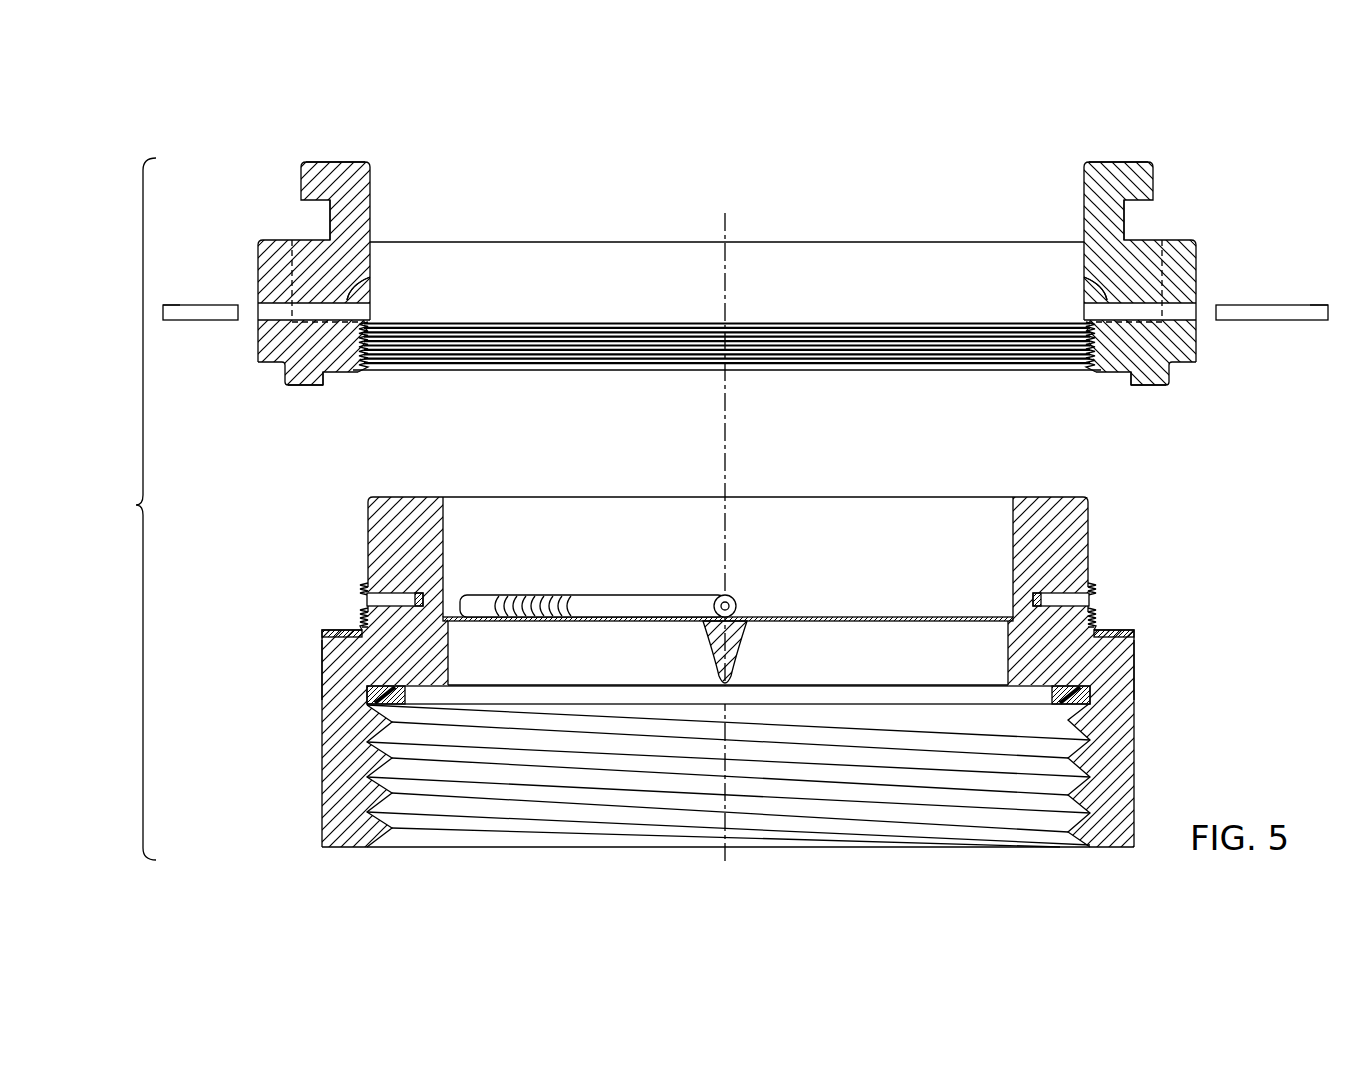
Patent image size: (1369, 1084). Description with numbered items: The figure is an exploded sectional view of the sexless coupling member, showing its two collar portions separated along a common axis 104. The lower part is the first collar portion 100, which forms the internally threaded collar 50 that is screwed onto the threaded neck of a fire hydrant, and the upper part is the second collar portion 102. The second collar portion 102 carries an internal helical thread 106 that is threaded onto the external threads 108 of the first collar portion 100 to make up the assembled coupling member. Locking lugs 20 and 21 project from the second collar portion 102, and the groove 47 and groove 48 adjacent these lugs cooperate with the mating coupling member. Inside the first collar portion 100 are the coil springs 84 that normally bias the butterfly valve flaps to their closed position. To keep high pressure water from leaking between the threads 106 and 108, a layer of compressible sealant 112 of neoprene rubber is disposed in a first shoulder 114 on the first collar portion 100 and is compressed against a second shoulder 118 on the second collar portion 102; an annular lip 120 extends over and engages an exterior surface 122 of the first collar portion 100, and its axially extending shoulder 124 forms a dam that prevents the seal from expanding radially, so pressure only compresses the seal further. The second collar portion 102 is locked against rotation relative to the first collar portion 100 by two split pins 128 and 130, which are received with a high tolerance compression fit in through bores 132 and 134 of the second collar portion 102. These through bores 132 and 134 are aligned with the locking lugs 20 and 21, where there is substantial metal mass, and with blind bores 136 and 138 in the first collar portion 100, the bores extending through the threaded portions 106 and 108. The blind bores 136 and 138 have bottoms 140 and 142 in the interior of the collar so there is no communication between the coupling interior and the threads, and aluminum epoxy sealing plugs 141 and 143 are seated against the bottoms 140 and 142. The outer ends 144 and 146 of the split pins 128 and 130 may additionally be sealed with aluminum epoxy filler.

The locking lug 20 is at (355, 162).
The locking lug 21 is at (1112, 162).
The groove 47 is at (1140, 240).
The groove 48 is at (315, 240).
The internally threaded collar 50 is at (466, 836).
The coil spring 84 is at (540, 596).
The first collar portion 100 is at (320, 712).
The second collar portion 102 is at (256, 261).
The axis 104 is at (730, 225).
The internal helical thread 106 is at (366, 324).
The external threads 108 is at (362, 618).
The layer of compressible sealant 112 is at (338, 626).
The first shoulder 114 is at (330, 632).
The second shoulder 118 is at (355, 374).
The annular lip 120 is at (310, 384).
The exterior surface 122 is at (322, 662).
The axially extending shoulder 124 is at (327, 380).
The split pin 128 is at (207, 322).
The split pin 130 is at (1268, 322).
The through bore 132 is at (372, 280).
The through bore 134 is at (1083, 280).
The blind bore 136 is at (397, 598).
The blind bore 138 is at (1053, 598).
The bottom 140 is at (425, 600).
The aluminum epoxy sealing plug 141 is at (420, 611).
The bottom 142 is at (1032, 600).
The aluminum epoxy sealing plug 143 is at (1038, 611).
The outer end 144 is at (163, 306).
The outer end 146 is at (1333, 306).